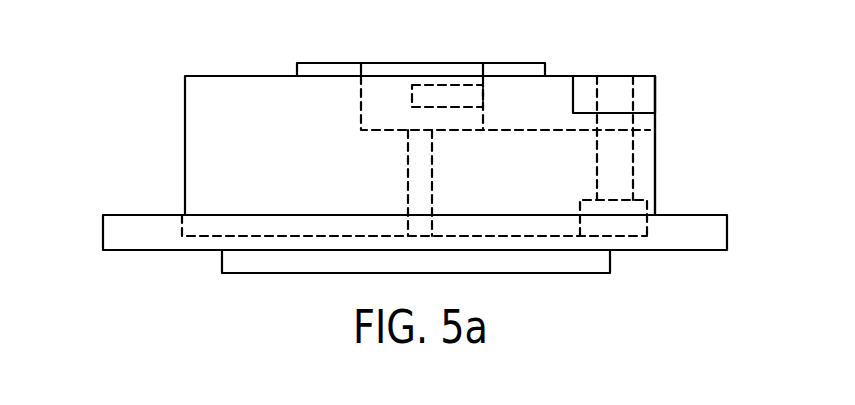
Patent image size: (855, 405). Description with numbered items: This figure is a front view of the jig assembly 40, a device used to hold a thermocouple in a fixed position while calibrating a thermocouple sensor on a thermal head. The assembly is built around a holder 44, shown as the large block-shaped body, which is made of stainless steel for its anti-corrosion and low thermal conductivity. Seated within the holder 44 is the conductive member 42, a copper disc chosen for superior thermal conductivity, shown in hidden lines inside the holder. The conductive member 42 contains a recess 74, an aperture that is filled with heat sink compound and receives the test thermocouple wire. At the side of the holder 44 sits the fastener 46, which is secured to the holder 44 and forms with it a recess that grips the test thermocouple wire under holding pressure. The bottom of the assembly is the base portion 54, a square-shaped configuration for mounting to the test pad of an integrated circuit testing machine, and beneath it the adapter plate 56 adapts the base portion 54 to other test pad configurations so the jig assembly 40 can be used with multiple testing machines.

The jig assembly 40 is at (113, 108).
The holder 44 is at (248, 76).
The conductive member 42 is at (358, 108).
The recess 74 is at (485, 97).
The fastener 46 is at (647, 76).
The base portion 54 is at (655, 150).
The adapter plate 56 is at (145, 215).